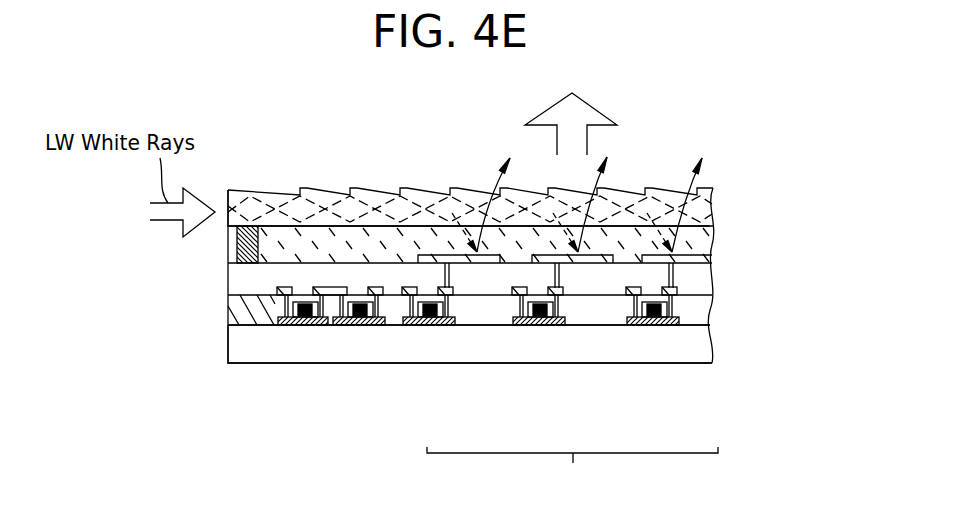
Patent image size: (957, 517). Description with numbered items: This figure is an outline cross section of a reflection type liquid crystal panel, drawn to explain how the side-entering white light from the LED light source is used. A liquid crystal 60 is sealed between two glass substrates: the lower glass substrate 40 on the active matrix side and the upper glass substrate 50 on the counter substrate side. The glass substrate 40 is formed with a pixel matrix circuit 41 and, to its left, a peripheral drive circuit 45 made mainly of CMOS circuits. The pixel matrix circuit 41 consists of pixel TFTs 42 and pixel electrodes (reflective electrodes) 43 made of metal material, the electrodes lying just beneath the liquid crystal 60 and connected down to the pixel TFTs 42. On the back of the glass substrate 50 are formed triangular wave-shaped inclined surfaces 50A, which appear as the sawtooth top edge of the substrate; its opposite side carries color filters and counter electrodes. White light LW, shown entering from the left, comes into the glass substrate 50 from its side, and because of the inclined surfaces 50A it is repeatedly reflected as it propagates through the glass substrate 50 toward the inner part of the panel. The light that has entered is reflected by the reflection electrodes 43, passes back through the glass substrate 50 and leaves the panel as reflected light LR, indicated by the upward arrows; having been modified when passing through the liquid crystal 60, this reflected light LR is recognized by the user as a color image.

The glass substrate 50 is at (292, 188).
The inclined surfaces 50A is at (445, 192).
The liquid crystal 60 is at (370, 248).
The pixel electrodes (reflective electrodes) 43 is at (479, 256).
The pixel TFTs 42 is at (440, 325).
The peripheral drive circuit 45 is at (390, 327).
The pixel matrix circuit 41 is at (572, 470).
The glass substrate 40 is at (252, 352).
The reflected light LR is at (587, 140).